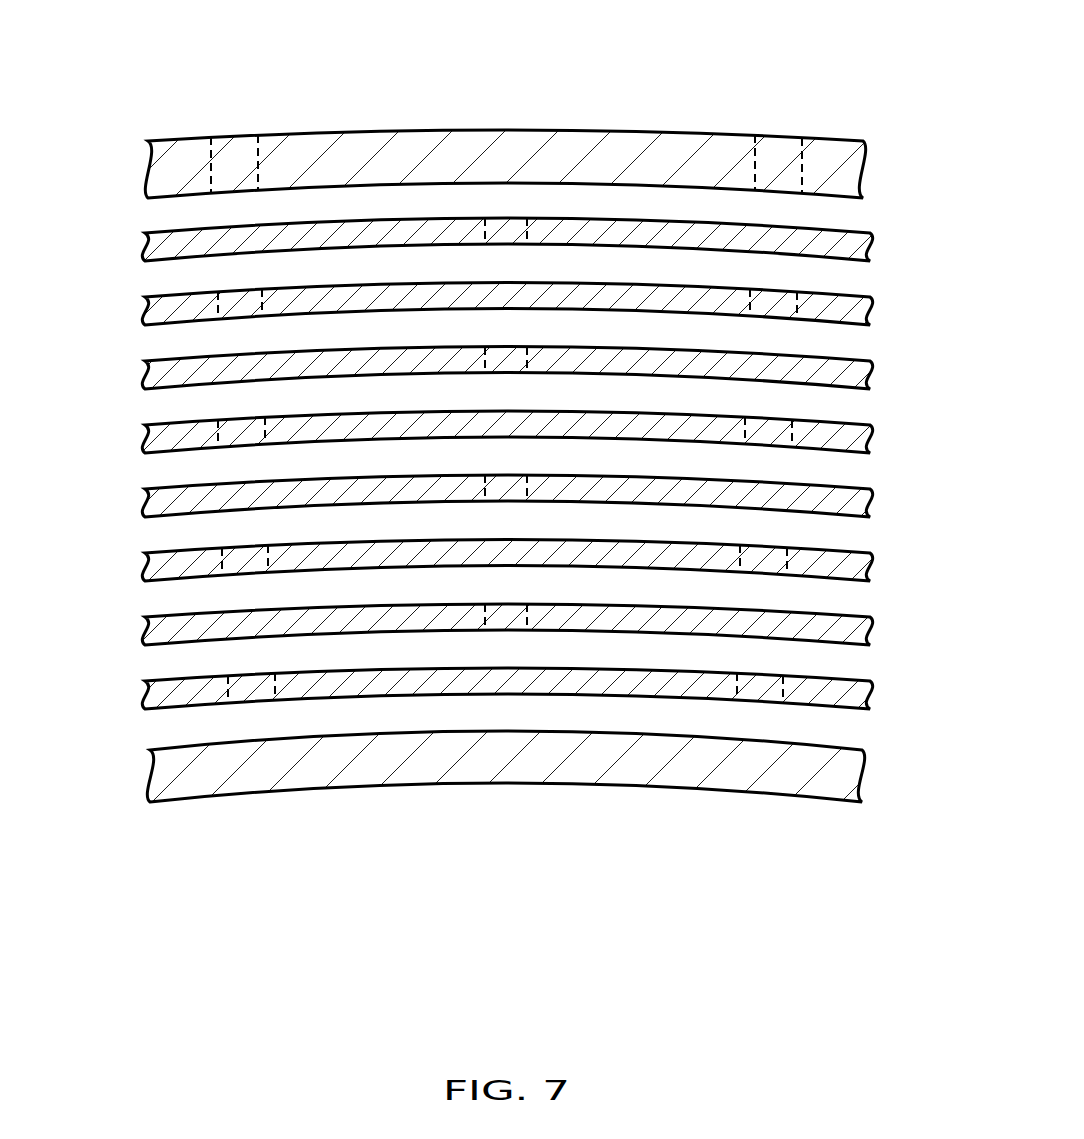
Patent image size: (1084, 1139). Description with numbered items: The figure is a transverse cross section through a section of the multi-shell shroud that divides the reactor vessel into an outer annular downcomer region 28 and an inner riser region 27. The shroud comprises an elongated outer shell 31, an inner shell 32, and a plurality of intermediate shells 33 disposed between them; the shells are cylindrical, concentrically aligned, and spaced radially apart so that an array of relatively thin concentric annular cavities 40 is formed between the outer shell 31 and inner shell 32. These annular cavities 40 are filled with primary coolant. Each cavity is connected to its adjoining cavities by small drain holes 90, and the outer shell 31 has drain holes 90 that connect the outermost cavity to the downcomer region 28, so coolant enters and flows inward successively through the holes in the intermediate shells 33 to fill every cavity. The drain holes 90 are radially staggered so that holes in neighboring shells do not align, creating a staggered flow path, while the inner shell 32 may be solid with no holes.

The riser region 27 is at (534, 839).
The downcomer region 28 is at (534, 81).
The outer shell 31 is at (608, 130).
The inner shell 32 is at (682, 787).
The intermediate shells 33 is at (877, 735).
The annular cavities 40 is at (173, 218).
The drain holes 90 is at (260, 172).